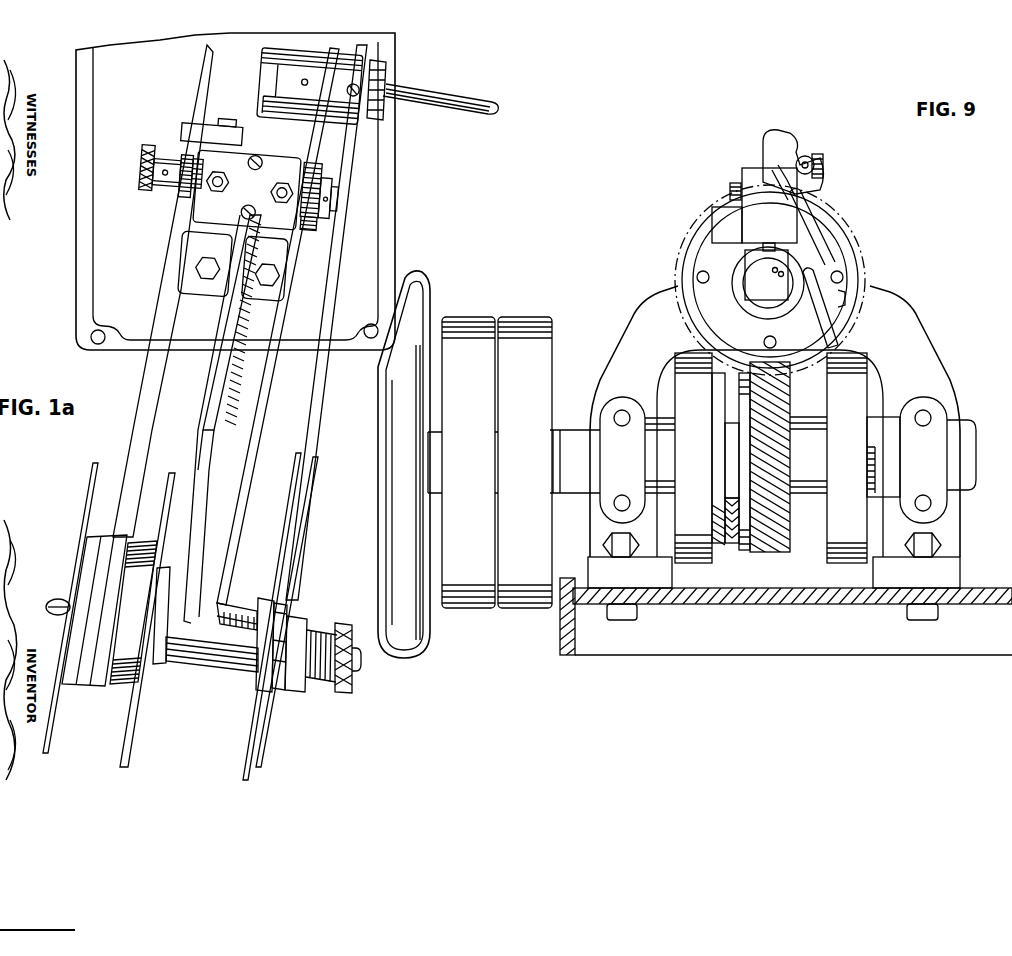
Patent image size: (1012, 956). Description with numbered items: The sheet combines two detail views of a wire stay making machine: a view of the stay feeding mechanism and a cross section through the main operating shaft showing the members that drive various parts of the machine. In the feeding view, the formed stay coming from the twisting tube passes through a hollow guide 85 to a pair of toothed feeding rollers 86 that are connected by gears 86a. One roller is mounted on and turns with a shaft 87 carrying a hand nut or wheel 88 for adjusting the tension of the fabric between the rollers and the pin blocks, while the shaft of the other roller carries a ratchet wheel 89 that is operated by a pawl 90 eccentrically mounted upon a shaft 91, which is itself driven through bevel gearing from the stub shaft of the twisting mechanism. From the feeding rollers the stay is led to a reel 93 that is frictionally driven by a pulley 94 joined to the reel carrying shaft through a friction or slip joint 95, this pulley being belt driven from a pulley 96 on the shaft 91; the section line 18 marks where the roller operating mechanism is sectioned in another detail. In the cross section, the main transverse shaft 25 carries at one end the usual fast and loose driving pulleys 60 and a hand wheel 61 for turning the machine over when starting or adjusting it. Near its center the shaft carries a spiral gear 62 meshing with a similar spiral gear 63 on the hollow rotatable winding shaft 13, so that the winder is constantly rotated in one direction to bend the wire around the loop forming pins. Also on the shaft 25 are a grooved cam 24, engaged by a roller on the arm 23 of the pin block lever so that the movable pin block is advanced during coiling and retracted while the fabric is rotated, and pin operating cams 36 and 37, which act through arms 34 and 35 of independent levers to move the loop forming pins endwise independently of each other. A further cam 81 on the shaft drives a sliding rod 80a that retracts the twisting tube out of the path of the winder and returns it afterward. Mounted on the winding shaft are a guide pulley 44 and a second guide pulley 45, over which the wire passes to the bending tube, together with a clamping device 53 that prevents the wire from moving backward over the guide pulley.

In FIG. 1A, the guide rails 18 is at (336, 49).
In FIG. 1A, the hollow guide 85 is at (204, 131).
In FIG. 1A, the toothed feeding rollers 86 is at (178, 197).
In FIG. 1A, the gears 86a is at (307, 172).
In FIG. 1A, the shaft 87 is at (139, 173).
In FIG. 1A, the hand nut or wheel 88 is at (155, 152).
In FIG. 1A, the ratchet wheel 89 is at (312, 231).
In FIG. 1A, the pawl 90 is at (322, 174).
In FIG. 1A, the shaft 91 is at (458, 103).
In FIG. 1A, the reel 93 is at (138, 682).
In FIG. 1A, the pulley 94 is at (279, 718).
In FIG. 1A, the friction or slip joint 95 is at (310, 617).
In FIG. 1A, the pulley 96 is at (389, 75).
In FIG. 9, the hollow rotatable winding shaft 13 is at (797, 256).
In FIG. 9, the arm or extension 23 is at (675, 565).
In FIG. 9, the cam 24 is at (704, 558).
In FIG. 9, the main transverse shaft 25 is at (572, 432).
In FIG. 9, the arm 34 is at (727, 508).
In FIG. 9, the arm 35 is at (736, 545).
In FIG. 9, the pin operating cam 36 is at (703, 379).
In FIG. 9, the pin operating cam 37 is at (743, 548).
In FIG. 9, the guide pulley 44 is at (821, 289).
In FIG. 9, the second guide pulley 45 is at (797, 198).
In FIG. 9, the clamping device 53 is at (784, 140).
In FIG. 9, the fast and loose driving pulleys 60 is at (512, 323).
In FIG. 9, the hand wheel 61 is at (413, 607).
In FIG. 9, the spiral gear 62 is at (786, 531).
In FIG. 9, the spiral gear 63 is at (858, 249).
In FIG. 9, the sliding rod 80a is at (870, 474).
In FIG. 9, the cam 81 is at (837, 552).